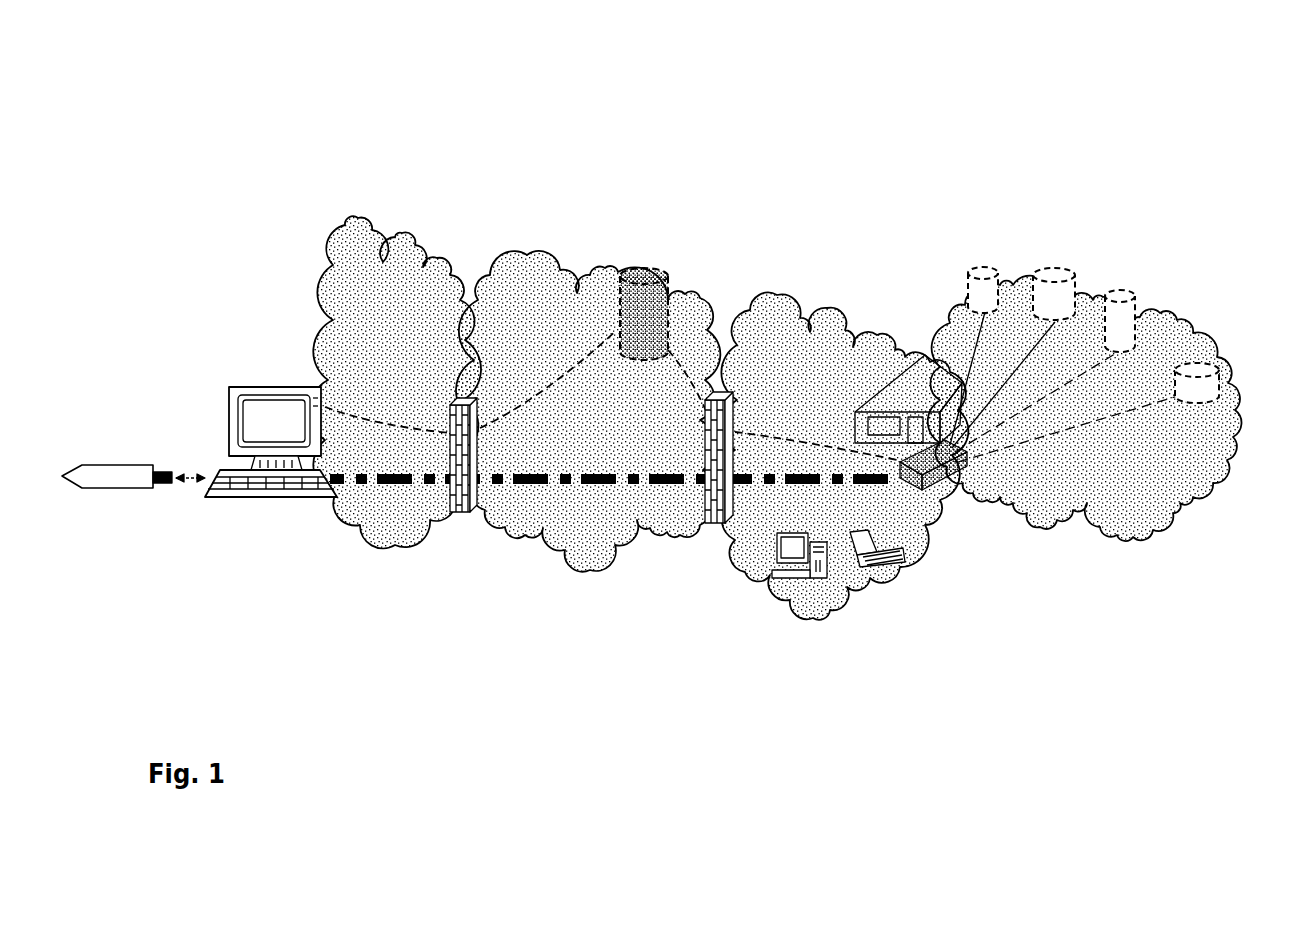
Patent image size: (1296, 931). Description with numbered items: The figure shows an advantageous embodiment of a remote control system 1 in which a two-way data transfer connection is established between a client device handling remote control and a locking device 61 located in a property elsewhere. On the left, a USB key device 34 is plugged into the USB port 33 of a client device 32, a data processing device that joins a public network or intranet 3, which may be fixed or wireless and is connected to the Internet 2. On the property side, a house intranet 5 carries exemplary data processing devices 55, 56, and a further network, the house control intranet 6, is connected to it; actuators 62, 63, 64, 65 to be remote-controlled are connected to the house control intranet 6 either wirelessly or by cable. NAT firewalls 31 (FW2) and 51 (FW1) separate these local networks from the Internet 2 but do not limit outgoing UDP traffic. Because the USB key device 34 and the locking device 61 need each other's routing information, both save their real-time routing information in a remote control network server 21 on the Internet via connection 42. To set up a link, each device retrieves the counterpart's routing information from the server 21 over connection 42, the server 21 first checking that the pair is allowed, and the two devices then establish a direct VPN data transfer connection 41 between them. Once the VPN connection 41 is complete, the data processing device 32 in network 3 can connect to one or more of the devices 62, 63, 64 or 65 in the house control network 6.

The remote control system 1 is at (514, 210).
The Internet 2 is at (588, 374).
The public network or intranet 3 is at (395, 349).
The house intranet 5 is at (843, 417).
The house control intranet 6 is at (1085, 456).
The remote control network server 21 is at (665, 275).
The NAT firewall FW2 31 is at (429, 510).
The client device 32 is at (271, 490).
The USB port 33 is at (161, 367).
The USB key device 34 is at (117, 525).
The VPN data transfer connection 41 is at (615, 587).
The connection to remote control network server 42 is at (680, 400).
The NAT firewall FW1 51 is at (685, 514).
The data processing device 55 is at (780, 600).
The data processing device 56 is at (872, 598).
The locking device 61 is at (1016, 493).
The actuator 62 is at (1235, 314).
The actuator 63 is at (1171, 247).
The actuator 64 is at (1088, 228).
The actuator 65 is at (1022, 222).